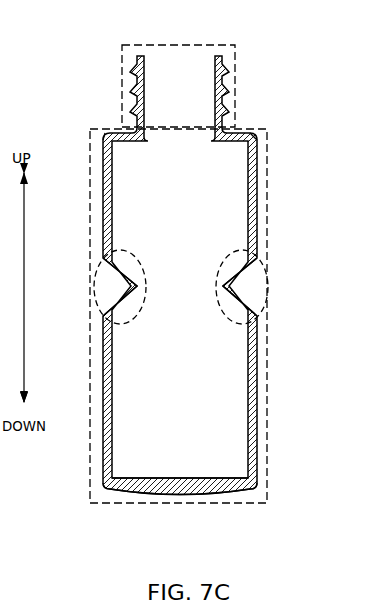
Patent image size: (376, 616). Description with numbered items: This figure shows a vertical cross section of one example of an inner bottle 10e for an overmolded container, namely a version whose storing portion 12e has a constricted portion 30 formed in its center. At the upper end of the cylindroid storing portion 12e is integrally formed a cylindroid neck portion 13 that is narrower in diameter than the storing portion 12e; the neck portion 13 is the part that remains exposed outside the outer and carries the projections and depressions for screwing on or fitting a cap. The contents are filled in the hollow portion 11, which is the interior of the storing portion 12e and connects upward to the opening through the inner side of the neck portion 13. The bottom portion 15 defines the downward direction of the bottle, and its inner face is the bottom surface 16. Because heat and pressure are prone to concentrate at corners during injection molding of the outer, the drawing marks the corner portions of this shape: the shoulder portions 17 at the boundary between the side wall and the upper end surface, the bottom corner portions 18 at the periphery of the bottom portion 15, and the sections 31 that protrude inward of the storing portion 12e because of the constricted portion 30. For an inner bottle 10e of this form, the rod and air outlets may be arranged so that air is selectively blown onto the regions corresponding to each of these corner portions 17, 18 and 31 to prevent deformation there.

The inner bottle 10e is at (271, 72).
The neck portion 13 is at (236, 96).
The storing portion 12e is at (264, 212).
The shoulder portion 17 is at (115, 142).
The constricted portion 30 is at (90, 294).
The inwardly protruding section 31 is at (130, 286).
The bottom surface 16 is at (180, 477).
The hollow portion 11 is at (214, 401).
The bottom portion 15 is at (186, 499).
The bottom corner portion 18 is at (100, 491).